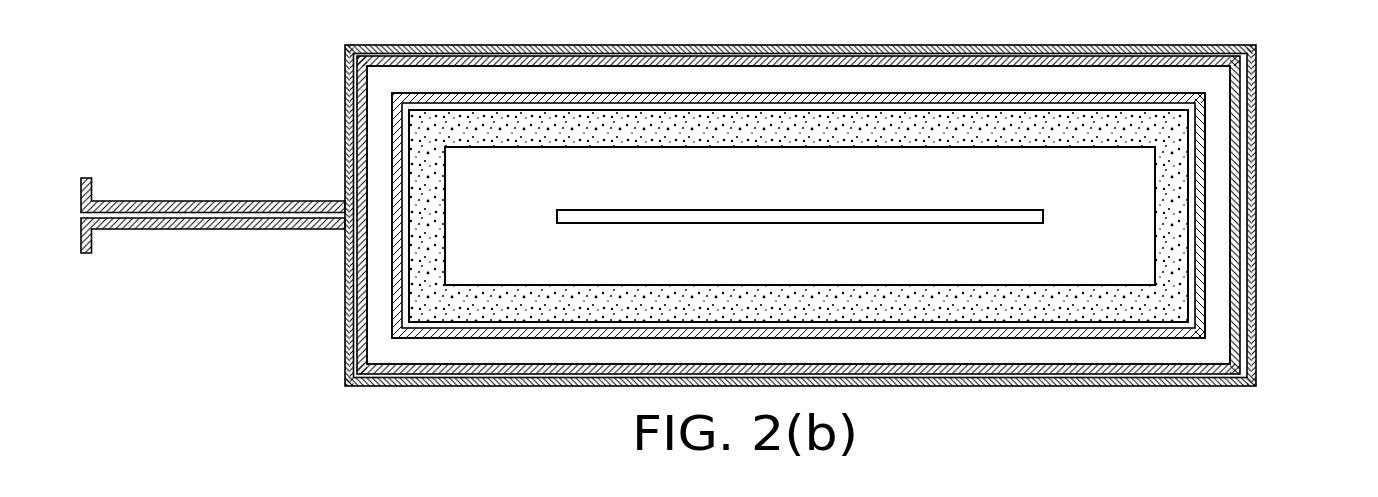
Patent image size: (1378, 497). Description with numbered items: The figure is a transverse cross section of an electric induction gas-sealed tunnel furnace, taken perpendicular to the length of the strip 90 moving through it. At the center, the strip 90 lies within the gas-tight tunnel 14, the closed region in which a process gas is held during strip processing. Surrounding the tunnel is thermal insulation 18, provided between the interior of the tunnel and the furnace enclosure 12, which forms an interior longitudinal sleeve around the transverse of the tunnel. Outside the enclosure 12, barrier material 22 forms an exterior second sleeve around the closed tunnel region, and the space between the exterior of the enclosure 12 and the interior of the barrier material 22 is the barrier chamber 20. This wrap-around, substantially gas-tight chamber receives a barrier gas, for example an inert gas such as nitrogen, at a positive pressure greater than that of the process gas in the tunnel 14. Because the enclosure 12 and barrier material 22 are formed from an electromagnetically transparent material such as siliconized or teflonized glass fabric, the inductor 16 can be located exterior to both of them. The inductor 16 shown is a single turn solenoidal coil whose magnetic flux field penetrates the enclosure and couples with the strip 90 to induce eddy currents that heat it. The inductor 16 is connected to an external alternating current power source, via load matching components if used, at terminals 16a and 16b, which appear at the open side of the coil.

The furnace enclosure 12 is at (1205, 265).
The gas-tight tunnel 14 is at (1102, 193).
The inductor 16 is at (1247, 93).
The terminal 16a is at (84, 178).
The terminal 16b is at (88, 253).
The thermal insulation 18 is at (507, 133).
The barrier chamber 20 is at (1217, 217).
The barrier material 22 is at (1237, 147).
The strip 90 is at (603, 215).